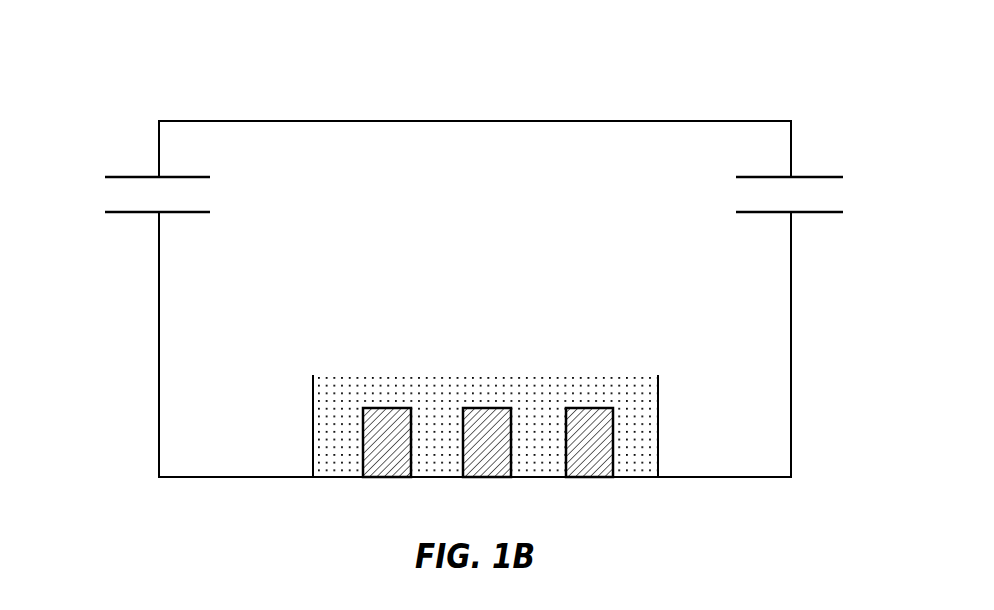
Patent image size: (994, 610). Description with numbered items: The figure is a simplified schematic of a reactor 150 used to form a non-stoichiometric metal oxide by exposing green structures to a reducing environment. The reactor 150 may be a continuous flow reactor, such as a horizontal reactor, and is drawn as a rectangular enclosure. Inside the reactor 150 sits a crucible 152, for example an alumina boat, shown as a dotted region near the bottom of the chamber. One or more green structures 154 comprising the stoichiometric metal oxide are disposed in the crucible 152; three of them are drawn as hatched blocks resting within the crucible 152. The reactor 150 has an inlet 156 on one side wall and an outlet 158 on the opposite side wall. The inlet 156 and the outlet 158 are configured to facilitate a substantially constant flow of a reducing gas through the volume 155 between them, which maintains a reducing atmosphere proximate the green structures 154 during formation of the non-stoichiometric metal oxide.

The reactor 150 is at (178, 80).
The crucible 152 is at (342, 395).
The green structures 154 is at (387, 430).
The volume 155 is at (486, 200).
The inlet 156 is at (133, 198).
The outlet 158 is at (812, 197).